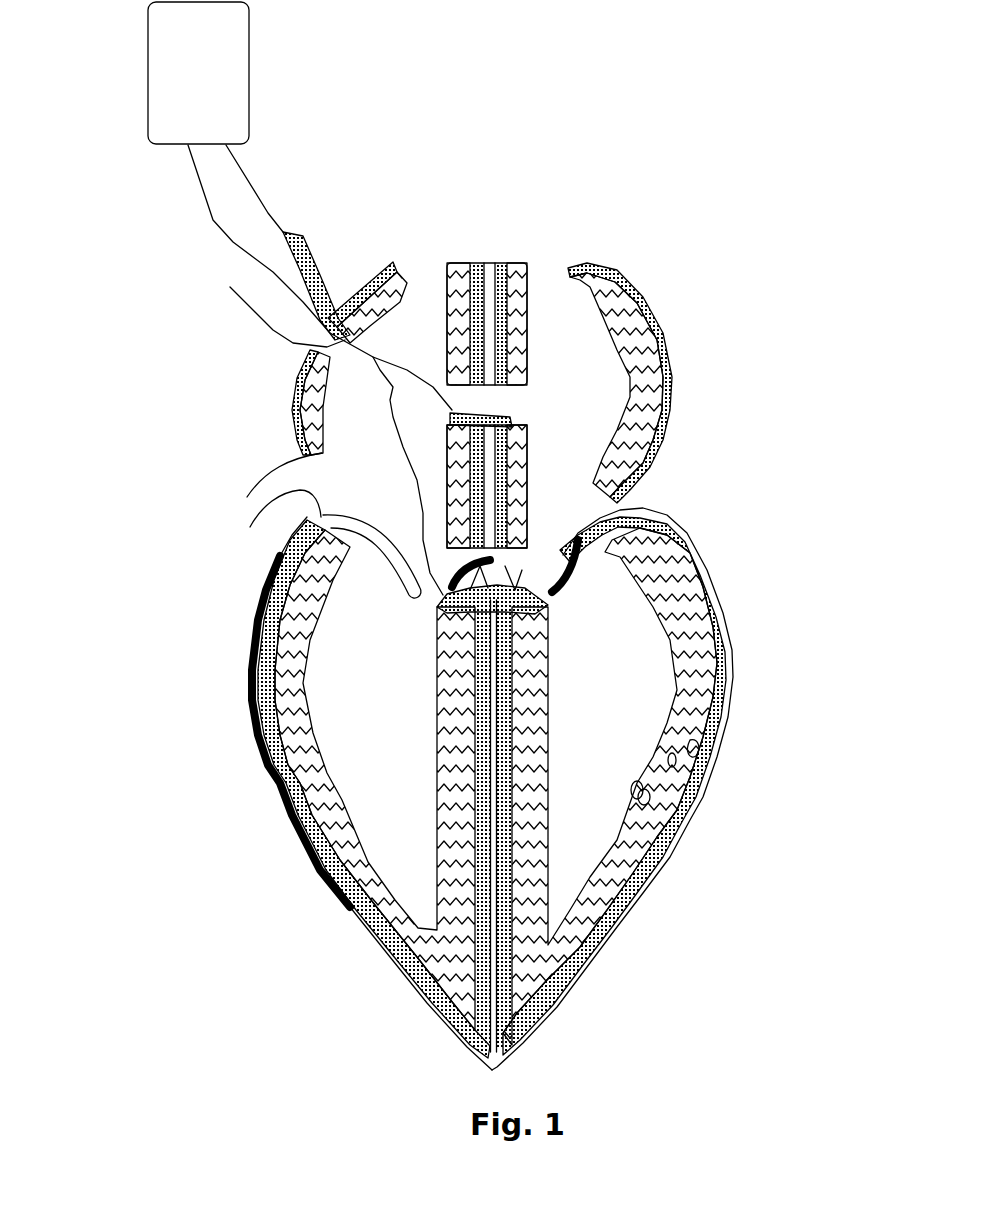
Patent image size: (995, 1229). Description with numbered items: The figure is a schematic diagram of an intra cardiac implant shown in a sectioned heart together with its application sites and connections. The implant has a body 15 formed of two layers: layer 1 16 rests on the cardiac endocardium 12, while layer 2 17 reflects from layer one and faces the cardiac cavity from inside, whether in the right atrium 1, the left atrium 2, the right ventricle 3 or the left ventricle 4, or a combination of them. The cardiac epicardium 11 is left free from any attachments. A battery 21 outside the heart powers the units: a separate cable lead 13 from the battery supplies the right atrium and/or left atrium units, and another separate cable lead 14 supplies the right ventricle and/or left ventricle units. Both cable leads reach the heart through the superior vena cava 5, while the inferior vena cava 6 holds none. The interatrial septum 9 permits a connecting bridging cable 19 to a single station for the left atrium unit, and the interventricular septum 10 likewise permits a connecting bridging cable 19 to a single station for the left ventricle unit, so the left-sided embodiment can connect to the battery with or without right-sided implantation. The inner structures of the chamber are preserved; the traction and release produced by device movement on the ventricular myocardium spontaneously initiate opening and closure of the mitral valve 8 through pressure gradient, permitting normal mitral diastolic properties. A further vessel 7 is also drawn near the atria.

The right atrium 1 is at (402, 397).
The left atrium 2 is at (573, 370).
The right ventricle 3 is at (352, 645).
The left ventricle 4 is at (620, 705).
The superior vena cava 5 is at (272, 318).
The inferior vena cava 6 is at (248, 495).
The coronary sinus 7 is at (340, 518).
The mitral valve 8 is at (537, 570).
The interatrial septum 9 is at (507, 283).
The interventricular septum 10 is at (487, 769).
The cardiac epicardium 11 is at (680, 523).
The cardiac endocardium 12 is at (717, 638).
The cable lead 13 is at (285, 260).
The cable lead 14 is at (224, 238).
The body 15 is at (683, 763).
The layer 1 16 is at (703, 746).
The layer 2 17 is at (644, 796).
The connecting bridging cable 19 is at (440, 603).
The battery 21 is at (148, 58).